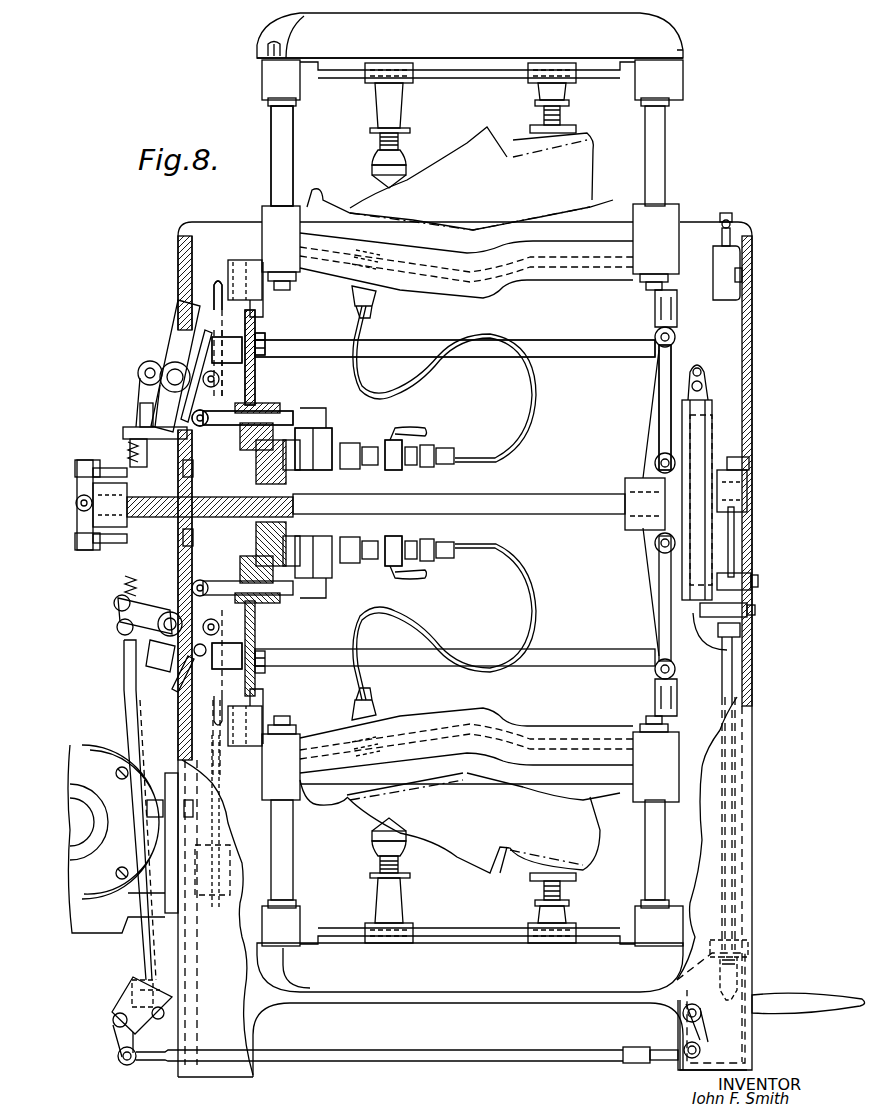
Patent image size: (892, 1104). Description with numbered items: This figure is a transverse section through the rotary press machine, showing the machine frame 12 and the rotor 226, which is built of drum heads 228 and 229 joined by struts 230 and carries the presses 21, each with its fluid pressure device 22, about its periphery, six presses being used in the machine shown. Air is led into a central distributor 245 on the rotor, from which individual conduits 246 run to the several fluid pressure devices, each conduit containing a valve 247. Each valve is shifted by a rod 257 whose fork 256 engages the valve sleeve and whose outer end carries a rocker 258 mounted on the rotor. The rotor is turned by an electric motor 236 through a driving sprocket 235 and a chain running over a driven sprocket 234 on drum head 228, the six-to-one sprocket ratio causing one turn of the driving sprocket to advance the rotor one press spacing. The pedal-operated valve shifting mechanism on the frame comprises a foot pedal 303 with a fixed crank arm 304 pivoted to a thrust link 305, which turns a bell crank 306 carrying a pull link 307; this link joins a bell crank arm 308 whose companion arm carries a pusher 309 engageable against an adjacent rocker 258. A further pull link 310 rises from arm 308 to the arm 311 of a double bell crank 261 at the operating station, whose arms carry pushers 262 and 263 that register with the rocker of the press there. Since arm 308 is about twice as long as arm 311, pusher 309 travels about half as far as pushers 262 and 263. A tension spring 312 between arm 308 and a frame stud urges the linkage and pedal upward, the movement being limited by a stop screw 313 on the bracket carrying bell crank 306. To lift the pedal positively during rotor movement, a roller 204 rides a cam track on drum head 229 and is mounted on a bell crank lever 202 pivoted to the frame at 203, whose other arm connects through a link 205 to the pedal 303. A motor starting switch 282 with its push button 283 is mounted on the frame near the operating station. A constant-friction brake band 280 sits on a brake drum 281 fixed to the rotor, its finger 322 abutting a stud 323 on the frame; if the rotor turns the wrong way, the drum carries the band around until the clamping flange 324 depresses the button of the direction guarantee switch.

The machine frame 12 is at (808, 362).
The press 21 is at (683, 80).
The fluid pressure device 22 is at (317, 180).
The bell crank lever 202 is at (734, 560).
The pivot 203 is at (752, 582).
The roller 204 is at (747, 474).
The link 205 is at (728, 846).
The rotor 226 is at (642, 520).
The drum head 228 is at (265, 340).
The drum head 229 is at (657, 380).
The strut 230 is at (566, 345).
The driven sprocket 234 is at (220, 290).
The driving sprocket 235 is at (220, 893).
The electric motor 236 is at (100, 768).
The central distributor 245 is at (300, 490).
The conduit 246 is at (514, 450).
The valve 247 is at (385, 592).
The fork 256 is at (322, 445).
The rod 257 is at (262, 418).
The rocker 258 is at (222, 340).
The double bell crank 261 is at (165, 364).
The pusher 262 is at (160, 440).
The pusher 263 is at (205, 346).
The brake band 280 is at (705, 445).
The brake drum 281 is at (712, 415).
The motor starting switch 282 is at (735, 256).
The push button 283 is at (735, 216).
The foot pedal 303 is at (810, 995).
The crank arm 304 is at (682, 1034).
The thrust link 305 is at (430, 1050).
The bell crank 306 is at (124, 1065).
The pull link 307 is at (130, 705).
The bell crank arm 308 is at (150, 614).
The pusher 309 is at (178, 680).
The pull link 310 is at (135, 415).
The arm 311 is at (172, 392).
The tension spring 312 is at (110, 582).
The stop screw 313 is at (135, 986).
The finger 322 is at (727, 650).
The stud 323 is at (742, 632).
The clamping flange 324 is at (708, 388).